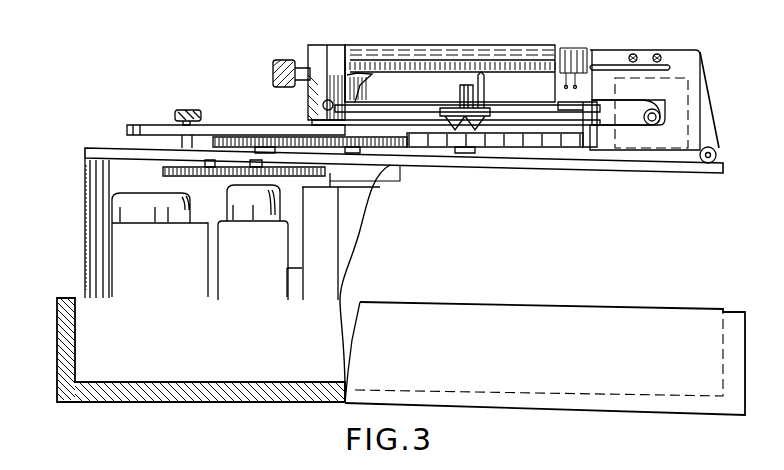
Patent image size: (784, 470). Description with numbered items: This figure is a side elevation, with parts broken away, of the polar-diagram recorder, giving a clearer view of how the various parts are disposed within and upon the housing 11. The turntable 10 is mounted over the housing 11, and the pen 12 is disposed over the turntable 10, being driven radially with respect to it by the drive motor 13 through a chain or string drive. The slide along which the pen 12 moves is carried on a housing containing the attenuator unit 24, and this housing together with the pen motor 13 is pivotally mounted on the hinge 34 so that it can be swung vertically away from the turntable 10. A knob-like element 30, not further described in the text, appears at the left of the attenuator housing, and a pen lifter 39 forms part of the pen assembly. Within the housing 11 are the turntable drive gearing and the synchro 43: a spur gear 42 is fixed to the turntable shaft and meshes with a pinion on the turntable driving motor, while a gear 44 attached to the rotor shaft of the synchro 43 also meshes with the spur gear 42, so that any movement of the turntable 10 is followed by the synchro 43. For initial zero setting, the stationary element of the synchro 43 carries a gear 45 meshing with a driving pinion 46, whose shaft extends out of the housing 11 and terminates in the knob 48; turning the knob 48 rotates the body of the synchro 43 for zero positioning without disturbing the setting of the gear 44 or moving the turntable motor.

The turntable 10 is at (490, 140).
The housing 11 is at (543, 410).
The pen 12 is at (462, 97).
The drive motor 13 is at (617, 78).
The attenuator unit 24 is at (318, 75).
The knob 30 is at (275, 60).
The hinge 34 is at (718, 150).
The pen lifter 39 is at (395, 66).
The spur gear 42 is at (330, 145).
The synchro 43 is at (228, 177).
The gear 44 is at (228, 138).
The gear 45 is at (222, 173).
The driving pinion 46 is at (166, 171).
The knob 48 is at (183, 110).